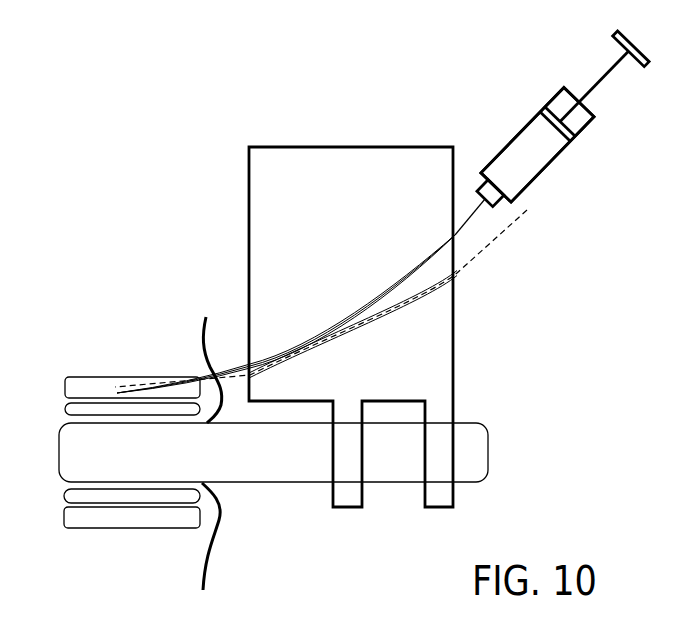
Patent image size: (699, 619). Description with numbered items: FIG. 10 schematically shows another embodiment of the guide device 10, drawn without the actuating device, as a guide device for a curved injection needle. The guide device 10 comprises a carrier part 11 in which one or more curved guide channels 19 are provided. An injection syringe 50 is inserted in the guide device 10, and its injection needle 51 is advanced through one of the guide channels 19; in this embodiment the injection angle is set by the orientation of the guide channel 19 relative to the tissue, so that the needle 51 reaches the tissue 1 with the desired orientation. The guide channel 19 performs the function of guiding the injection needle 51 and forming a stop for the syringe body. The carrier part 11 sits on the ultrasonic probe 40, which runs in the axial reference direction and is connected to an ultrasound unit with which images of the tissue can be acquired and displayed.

The skin 1 is at (153, 593).
The guide device 10 is at (317, 219).
The carrier part 11 is at (260, 262).
The guide channel 19 is at (437, 295).
The ultrasonic probe 40 is at (480, 456).
The injection syringe 50 is at (559, 122).
The injection needle 51 is at (471, 203).